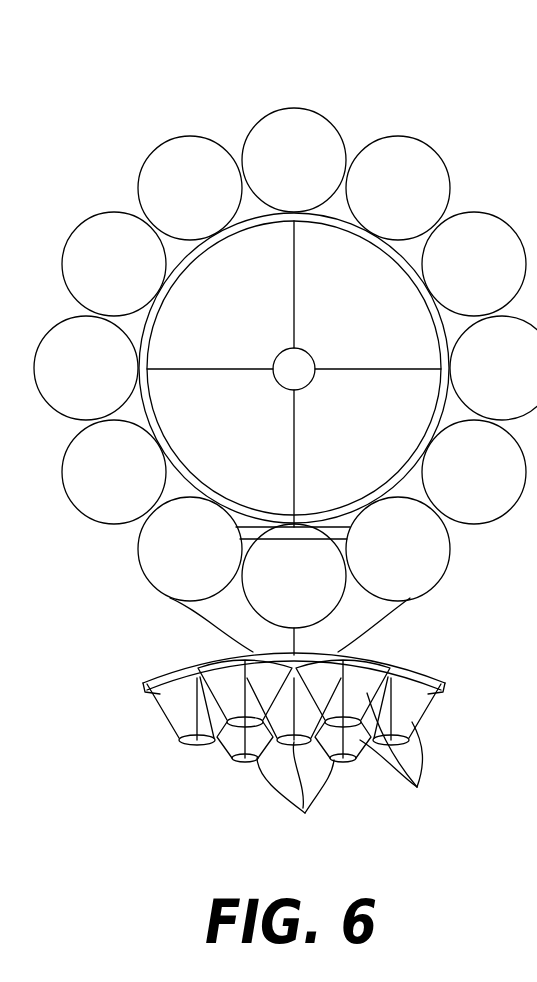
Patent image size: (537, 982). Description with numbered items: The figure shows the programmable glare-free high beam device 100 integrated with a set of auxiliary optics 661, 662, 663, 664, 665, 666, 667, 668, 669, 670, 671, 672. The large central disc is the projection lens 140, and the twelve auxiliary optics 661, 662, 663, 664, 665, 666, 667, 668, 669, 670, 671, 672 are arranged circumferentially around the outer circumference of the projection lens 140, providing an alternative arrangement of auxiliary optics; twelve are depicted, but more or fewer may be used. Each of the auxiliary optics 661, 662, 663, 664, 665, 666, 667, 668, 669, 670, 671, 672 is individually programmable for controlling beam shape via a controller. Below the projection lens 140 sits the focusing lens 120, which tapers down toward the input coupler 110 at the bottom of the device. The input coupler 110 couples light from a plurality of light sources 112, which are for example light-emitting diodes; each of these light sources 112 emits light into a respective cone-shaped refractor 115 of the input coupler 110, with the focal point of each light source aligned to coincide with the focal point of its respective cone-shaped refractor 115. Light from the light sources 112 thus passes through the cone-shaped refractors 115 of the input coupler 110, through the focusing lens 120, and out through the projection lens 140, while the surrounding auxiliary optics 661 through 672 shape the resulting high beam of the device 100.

The programmable glare-free high beam device 100 is at (232, 112).
The projection lens 140 is at (220, 321).
The auxiliary optic 661 is at (273, 173).
The auxiliary optic 662 is at (377, 201).
The auxiliary optic 663 is at (453, 277).
The auxiliary optic 664 is at (481, 381).
The auxiliary optic 665 is at (453, 485).
The auxiliary optic 666 is at (377, 562).
The auxiliary optic 667 is at (273, 589).
The auxiliary optic 668 is at (169, 562).
The auxiliary optic 669 is at (93, 485).
The auxiliary optic 670 is at (65, 381).
The auxiliary optic 671 is at (93, 277).
The auxiliary optic 672 is at (169, 201).
The focusing lens 120 is at (205, 615).
The input coupler 110 is at (137, 686).
The light sources 112 is at (295, 794).
The cone-shaped refractor 115 is at (402, 758).